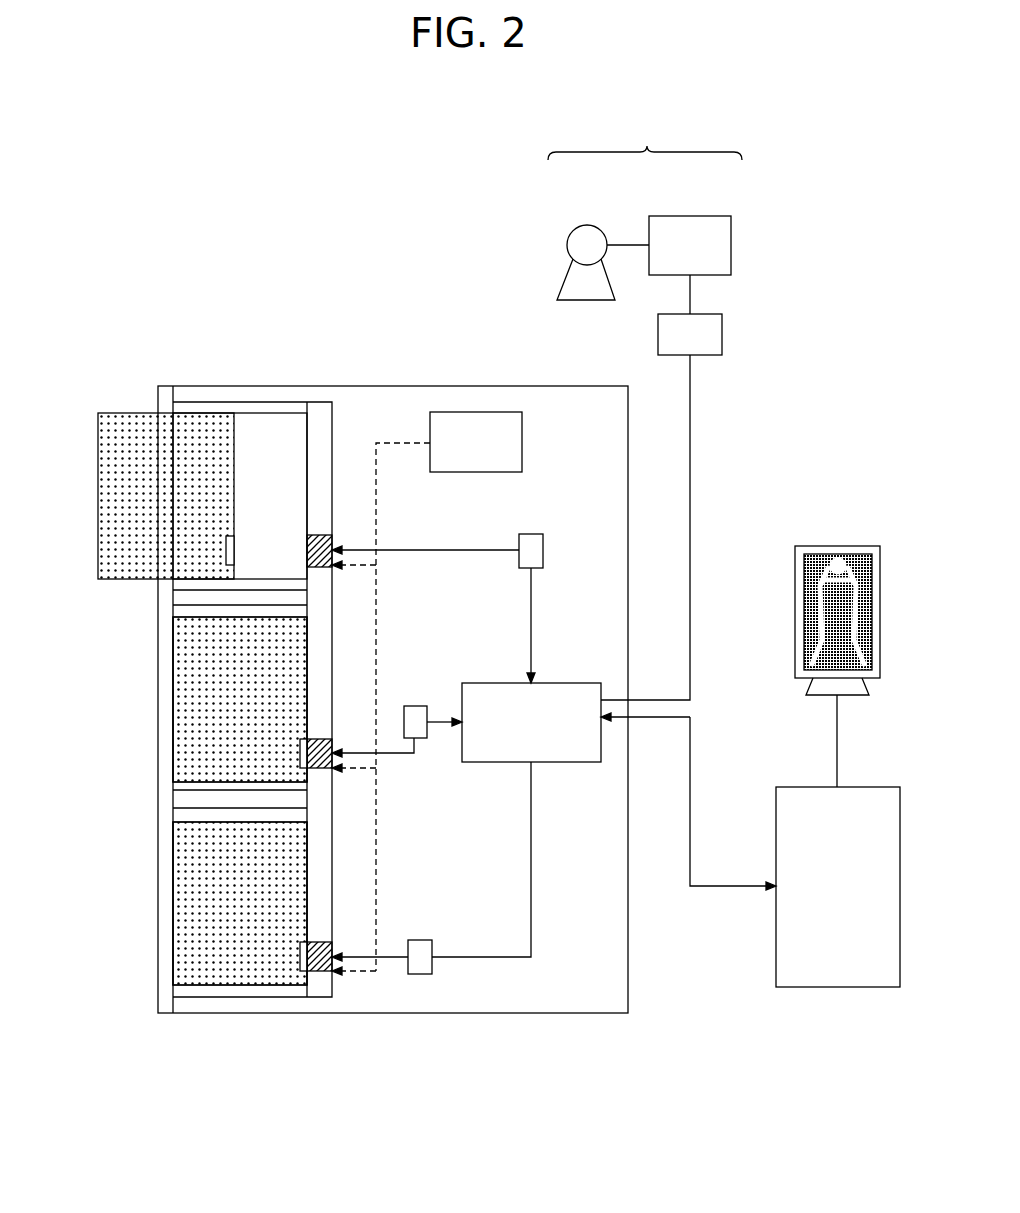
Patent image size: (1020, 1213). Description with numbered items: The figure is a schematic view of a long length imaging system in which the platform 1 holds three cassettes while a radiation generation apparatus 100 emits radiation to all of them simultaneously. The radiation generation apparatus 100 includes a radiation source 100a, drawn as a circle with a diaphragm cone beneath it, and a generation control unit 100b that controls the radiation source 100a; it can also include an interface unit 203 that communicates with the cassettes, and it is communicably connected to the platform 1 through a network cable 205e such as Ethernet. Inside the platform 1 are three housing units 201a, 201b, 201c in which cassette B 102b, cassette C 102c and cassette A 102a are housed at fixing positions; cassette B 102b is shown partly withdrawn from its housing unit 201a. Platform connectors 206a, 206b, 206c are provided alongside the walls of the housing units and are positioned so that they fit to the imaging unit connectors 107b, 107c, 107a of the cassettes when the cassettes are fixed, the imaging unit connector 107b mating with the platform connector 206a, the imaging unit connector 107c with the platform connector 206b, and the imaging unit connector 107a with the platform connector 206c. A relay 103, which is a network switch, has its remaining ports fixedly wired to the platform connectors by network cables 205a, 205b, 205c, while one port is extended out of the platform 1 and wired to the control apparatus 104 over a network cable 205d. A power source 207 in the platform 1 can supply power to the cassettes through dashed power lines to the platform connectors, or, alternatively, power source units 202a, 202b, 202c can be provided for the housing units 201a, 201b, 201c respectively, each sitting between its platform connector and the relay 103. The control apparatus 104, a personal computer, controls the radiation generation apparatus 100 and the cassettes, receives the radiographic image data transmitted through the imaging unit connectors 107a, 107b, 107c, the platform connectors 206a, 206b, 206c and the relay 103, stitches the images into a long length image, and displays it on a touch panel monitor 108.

The radiography apparatus 1 is at (470, 383).
The radiation generation apparatus 100 is at (645, 211).
The radiation source 100a is at (583, 222).
The generation control unit 100b is at (688, 216).
The interface unit 203 is at (723, 332).
The power source 207 is at (522, 441).
The housing unit 201a is at (332, 440).
The housing unit 201b is at (332, 648).
The housing unit 201c is at (332, 858).
The platform connector 206a is at (332, 520).
The platform connector 206b is at (332, 718).
The platform connector 206c is at (332, 920).
The power source unit 202a is at (529, 534).
The power source unit 202b is at (415, 705).
The power source unit 202c is at (422, 940).
The network cable 205a is at (531, 600).
The network cable 205b is at (404, 756).
The network cable 205c is at (531, 872).
The network cable 205d is at (690, 812).
The network cable 205e is at (690, 568).
The relay 103 is at (578, 682).
The control apparatus 104 is at (838, 988).
The touch panel monitor 108 is at (838, 546).
The cassette 102a is at (190, 927).
The cassette 102b is at (110, 512).
The cassette 102c is at (190, 724).
The imaging unit connector 107a is at (300, 955).
The imaging unit connector 107b is at (236, 550).
The imaging unit connector 107c is at (300, 752).